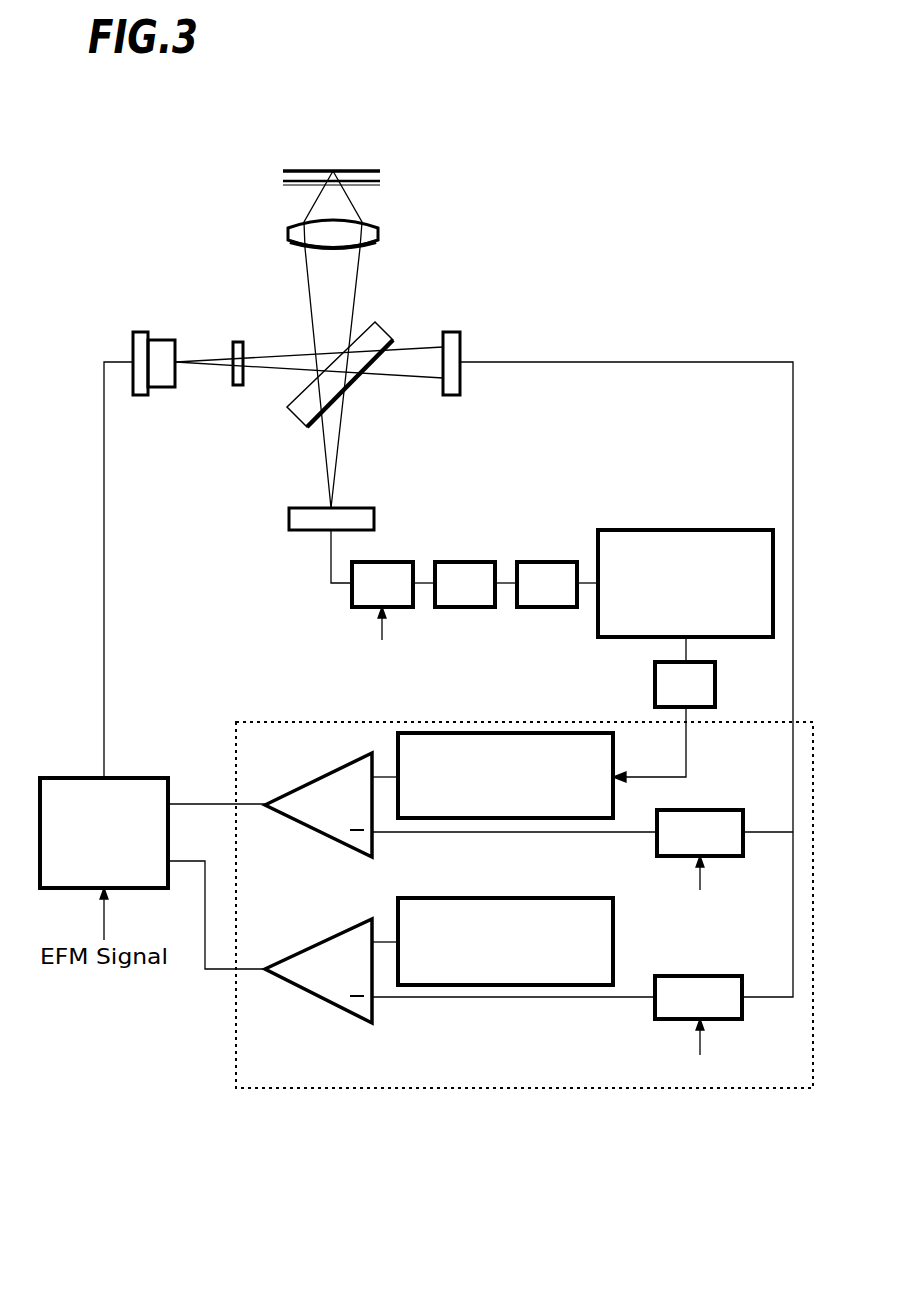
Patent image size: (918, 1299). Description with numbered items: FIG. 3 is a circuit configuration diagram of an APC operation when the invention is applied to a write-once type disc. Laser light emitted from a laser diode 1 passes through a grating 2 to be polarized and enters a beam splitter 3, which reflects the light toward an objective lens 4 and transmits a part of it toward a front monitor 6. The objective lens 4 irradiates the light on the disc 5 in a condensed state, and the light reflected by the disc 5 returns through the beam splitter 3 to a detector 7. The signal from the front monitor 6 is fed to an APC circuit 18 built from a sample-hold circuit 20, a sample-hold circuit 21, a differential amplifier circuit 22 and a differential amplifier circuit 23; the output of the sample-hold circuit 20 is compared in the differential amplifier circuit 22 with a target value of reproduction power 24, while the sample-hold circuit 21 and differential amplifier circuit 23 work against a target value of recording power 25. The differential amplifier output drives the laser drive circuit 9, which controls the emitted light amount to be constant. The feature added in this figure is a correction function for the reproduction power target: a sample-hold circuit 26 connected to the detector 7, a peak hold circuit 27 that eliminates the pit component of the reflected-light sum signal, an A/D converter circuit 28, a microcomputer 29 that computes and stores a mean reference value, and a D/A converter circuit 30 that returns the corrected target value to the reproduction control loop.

The laser diode 1 is at (160, 333).
The grating 2 is at (237, 388).
The beam splitter 3 is at (378, 326).
The objective lens 4 is at (378, 218).
The disc 5 is at (380, 175).
The front monitor 6 is at (461, 345).
The detector 7 is at (358, 505).
The laser drive circuit 9 is at (127, 778).
The APC circuit 18 is at (355, 1077).
The sample-hold circuit 20 is at (727, 810).
The sample-hold circuit 21 is at (727, 976).
The differential amplifier circuit 22 is at (312, 778).
The differential amplifier circuit 23 is at (312, 942).
The target value of reproduction power 24 is at (613, 752).
The target value of recording power 25 is at (563, 898).
The sample-hold circuit 26 is at (392, 560).
The peak hold circuit 27 is at (470, 560).
The A/D converter circuit 28 is at (545, 560).
The microcomputer 29 is at (688, 530).
The D/A converter circuit 30 is at (655, 685).